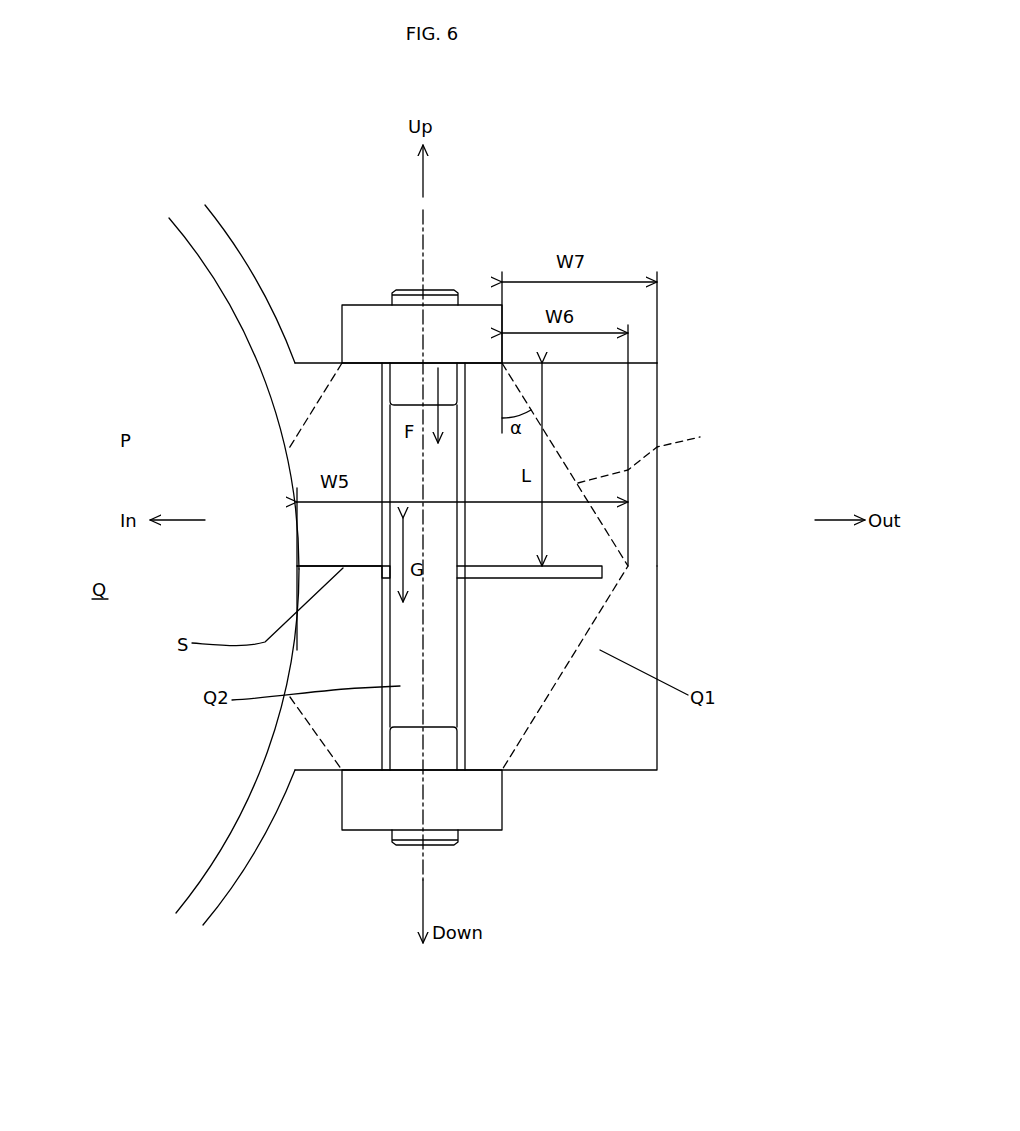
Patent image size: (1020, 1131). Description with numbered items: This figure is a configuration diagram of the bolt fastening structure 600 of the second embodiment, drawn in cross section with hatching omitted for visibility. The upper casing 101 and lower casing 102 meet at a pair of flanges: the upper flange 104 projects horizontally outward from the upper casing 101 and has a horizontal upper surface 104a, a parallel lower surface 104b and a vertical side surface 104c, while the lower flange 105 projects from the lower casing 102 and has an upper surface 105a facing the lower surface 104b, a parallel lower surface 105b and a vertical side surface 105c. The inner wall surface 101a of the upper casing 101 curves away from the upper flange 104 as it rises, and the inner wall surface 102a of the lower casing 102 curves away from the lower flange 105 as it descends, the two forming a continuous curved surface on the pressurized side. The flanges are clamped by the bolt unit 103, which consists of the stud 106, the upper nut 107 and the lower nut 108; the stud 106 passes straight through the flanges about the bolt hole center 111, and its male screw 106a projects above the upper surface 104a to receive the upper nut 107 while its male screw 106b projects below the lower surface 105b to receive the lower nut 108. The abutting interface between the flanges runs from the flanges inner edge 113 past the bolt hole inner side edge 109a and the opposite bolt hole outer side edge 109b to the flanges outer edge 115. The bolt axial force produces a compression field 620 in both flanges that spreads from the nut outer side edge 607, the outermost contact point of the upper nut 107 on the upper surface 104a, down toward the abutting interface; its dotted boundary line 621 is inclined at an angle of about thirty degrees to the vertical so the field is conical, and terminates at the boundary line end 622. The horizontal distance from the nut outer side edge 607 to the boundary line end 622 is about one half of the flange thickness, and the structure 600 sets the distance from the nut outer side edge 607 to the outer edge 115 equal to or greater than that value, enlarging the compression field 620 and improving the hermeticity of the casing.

The bolt fastening structure 600 is at (122, 219).
The upper casing 101 is at (212, 229).
The inner wall surface 101a is at (224, 299).
The lower casing 102 is at (228, 885).
The inner wall surface 102a is at (223, 850).
The bolt unit 103 is at (389, 283).
The upper flange 104 is at (640, 418).
The upper surface 104a is at (640, 363).
The lower surface 104b is at (318, 568).
The side surface 104c is at (657, 478).
The lower flange 105 is at (633, 699).
The upper surface 105a is at (325, 566).
The lower surface 105b is at (625, 771).
The side surface 105c is at (660, 653).
The stud 106 is at (390, 708).
The male screw 106a is at (458, 290).
The male screw 106b is at (462, 843).
The upper nut 107 is at (352, 305).
The lower nut 108 is at (503, 790).
The bolt hole inner side edge 109a is at (377, 568).
The bolt hole outer side edge 109b is at (465, 566).
The bolt hole center 111 is at (403, 273).
The inner edge of the abutting interface 113 is at (300, 566).
The outer edge of the abutting interface 115 is at (633, 567).
The nut outer side edge 607 is at (500, 360).
The compression field 620 is at (577, 512).
The boundary line 621 is at (658, 453).
The boundary line end 622 is at (657, 578).